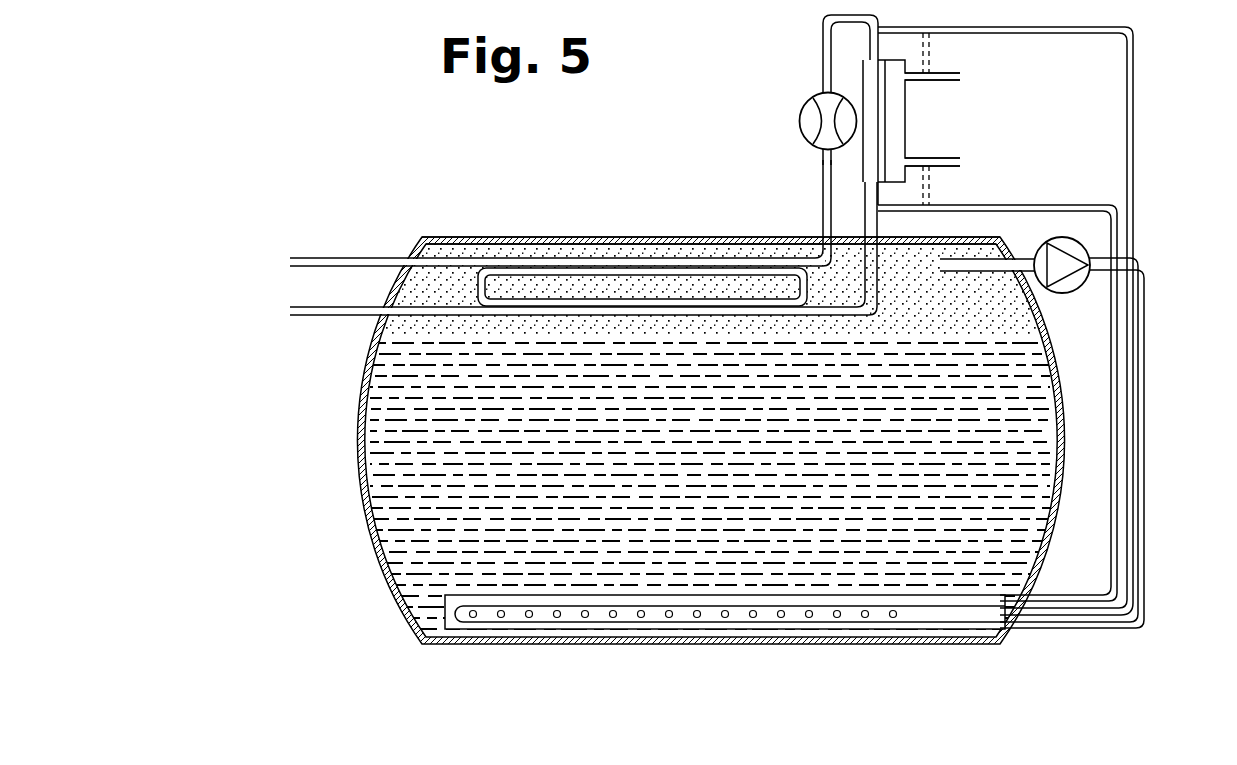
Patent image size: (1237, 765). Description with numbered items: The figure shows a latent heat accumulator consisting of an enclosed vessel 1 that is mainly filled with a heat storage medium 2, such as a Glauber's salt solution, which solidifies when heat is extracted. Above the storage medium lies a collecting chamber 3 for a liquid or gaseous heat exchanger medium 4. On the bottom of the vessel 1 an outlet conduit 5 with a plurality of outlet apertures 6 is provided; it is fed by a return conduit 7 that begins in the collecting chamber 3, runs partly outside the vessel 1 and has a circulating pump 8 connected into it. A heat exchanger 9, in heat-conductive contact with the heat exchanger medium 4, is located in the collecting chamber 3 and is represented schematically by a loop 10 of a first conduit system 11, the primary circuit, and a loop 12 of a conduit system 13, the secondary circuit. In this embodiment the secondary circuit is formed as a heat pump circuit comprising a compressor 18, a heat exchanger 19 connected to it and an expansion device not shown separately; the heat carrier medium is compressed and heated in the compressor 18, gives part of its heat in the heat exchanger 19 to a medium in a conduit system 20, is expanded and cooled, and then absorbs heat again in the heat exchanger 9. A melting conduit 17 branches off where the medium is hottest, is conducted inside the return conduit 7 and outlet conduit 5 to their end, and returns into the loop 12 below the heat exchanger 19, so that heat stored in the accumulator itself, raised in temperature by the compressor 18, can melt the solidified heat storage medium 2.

The vessel 1 is at (364, 485).
The heat storage medium 2 is at (400, 420).
The collecting chamber 3 is at (906, 268).
The heat exchanger medium 4 is at (1000, 315).
The outlet conduit 5 is at (820, 626).
The outlet apertures 6 is at (722, 618).
The return conduit 7 is at (1140, 421).
The circulating pump 8 is at (1076, 249).
The heat exchanger 9 is at (647, 241).
The loop of primary circuit 10 is at (463, 270).
The first conduit system 11 is at (285, 287).
The loop of secondary circuit 12 is at (640, 315).
The conduit system 13 is at (815, 205).
The melting conduit 17 is at (1137, 181).
The compressor 18 is at (809, 109).
The heat exchanger 19 is at (921, 117).
The conduit system 20 is at (953, 73).